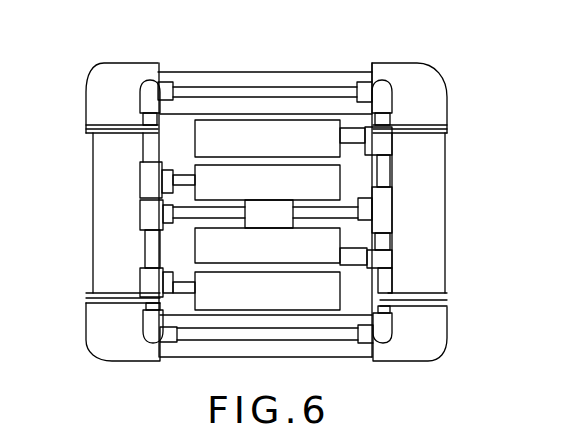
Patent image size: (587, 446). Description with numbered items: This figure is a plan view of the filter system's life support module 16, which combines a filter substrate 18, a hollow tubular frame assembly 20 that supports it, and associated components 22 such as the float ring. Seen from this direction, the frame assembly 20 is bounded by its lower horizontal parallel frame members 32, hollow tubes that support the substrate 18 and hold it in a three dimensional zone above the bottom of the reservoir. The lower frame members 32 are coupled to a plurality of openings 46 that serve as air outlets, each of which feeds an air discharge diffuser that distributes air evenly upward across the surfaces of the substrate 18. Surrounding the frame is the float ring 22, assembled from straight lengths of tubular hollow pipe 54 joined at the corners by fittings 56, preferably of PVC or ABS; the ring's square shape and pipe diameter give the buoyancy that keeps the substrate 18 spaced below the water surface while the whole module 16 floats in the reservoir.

The life support module 16 is at (271, 203).
The filter substrate 18 is at (143, 140).
The hollow tubular frame assembly 20 is at (328, 82).
The float ring 22 is at (265, 72).
The lower horizontal parallel frame members 32 is at (207, 88).
The openings 46 is at (167, 173).
The tubular hollow pipe 54 is at (229, 72).
The fittings 56 is at (106, 76).